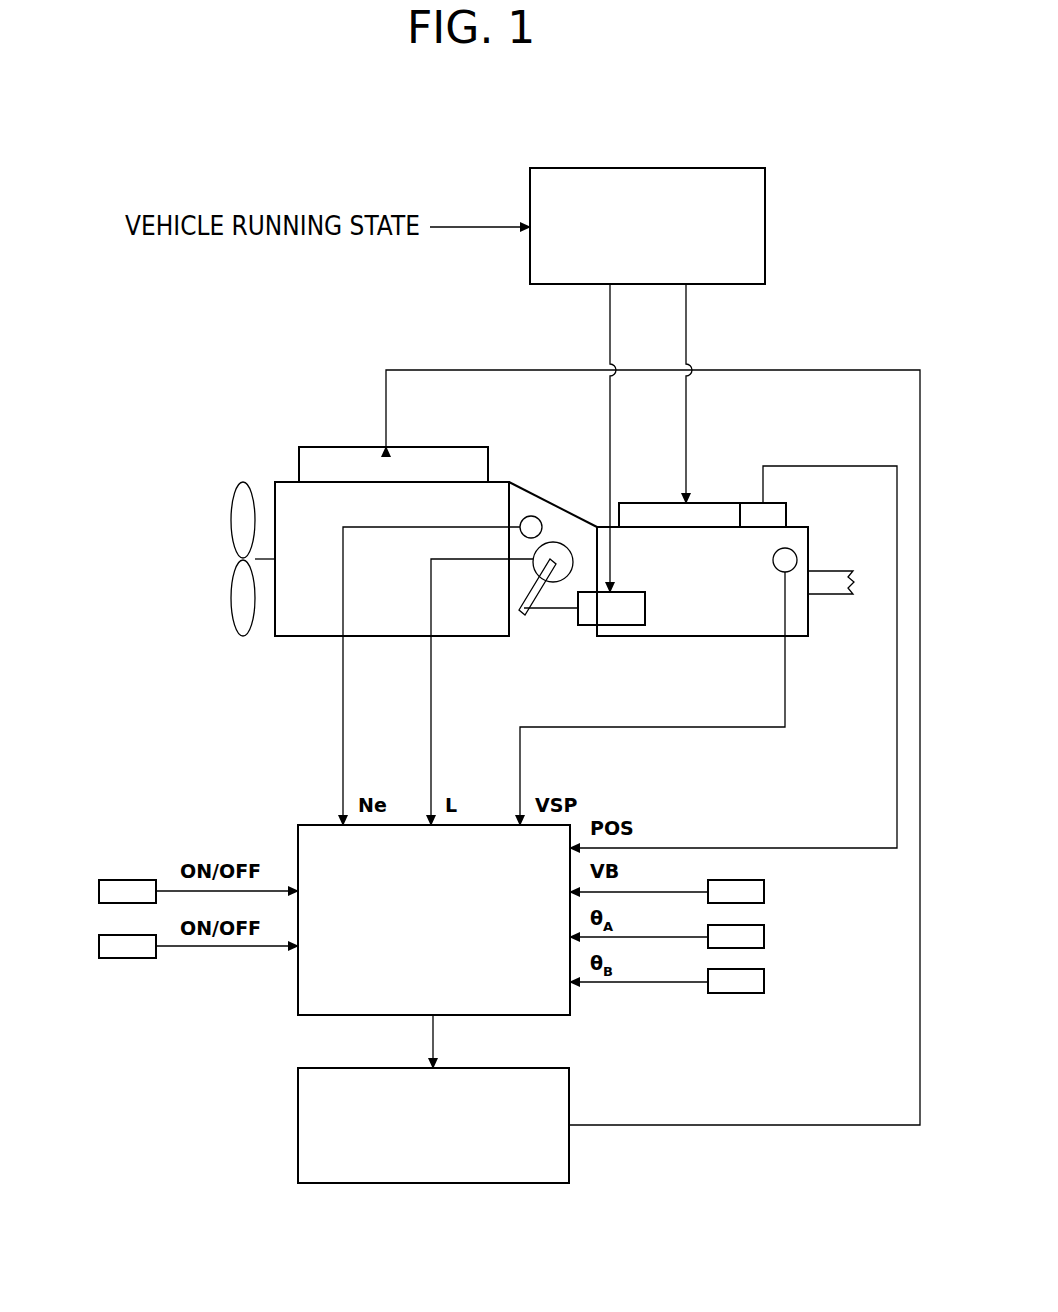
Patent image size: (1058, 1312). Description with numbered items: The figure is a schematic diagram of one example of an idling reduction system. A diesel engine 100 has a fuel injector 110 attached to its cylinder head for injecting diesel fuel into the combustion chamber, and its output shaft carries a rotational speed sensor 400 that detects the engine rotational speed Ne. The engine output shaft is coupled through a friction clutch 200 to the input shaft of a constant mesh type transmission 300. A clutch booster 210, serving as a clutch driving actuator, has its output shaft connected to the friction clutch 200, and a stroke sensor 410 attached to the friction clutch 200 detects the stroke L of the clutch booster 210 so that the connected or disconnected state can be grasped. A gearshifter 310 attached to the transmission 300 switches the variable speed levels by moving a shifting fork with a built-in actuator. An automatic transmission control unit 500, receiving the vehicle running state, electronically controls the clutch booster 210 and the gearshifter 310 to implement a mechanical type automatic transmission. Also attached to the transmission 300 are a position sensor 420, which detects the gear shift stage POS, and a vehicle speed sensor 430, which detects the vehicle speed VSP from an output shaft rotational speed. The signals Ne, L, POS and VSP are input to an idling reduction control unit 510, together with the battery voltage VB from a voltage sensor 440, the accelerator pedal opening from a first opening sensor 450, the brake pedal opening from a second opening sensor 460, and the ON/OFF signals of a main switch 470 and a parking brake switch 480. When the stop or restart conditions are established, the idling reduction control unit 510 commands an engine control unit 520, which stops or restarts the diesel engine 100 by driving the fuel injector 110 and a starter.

The diesel engine 100 is at (522, 553).
The fuel injector 110 is at (340, 447).
The friction clutch 200 is at (528, 637).
The clutch booster 210 is at (611, 625).
The transmission 300 is at (707, 637).
The gearshifter 310 is at (643, 503).
The rotational speed sensor 400 is at (531, 515).
The stroke sensor 410 is at (555, 542).
The position sensor 420 is at (742, 503).
The vehicle speed sensor 430 is at (796, 550).
The voltage sensor 440 is at (764, 894).
The first opening sensor 450 is at (764, 939).
The second opening sensor 460 is at (764, 984).
The main switch 470 is at (99, 887).
The parking brake switch 480 is at (99, 944).
The automatic transmission control unit 500 is at (640, 168).
The idling reduction control unit 510 is at (298, 825).
The engine control unit 520 is at (298, 1078).